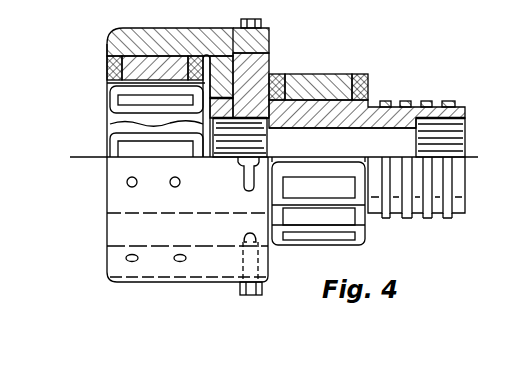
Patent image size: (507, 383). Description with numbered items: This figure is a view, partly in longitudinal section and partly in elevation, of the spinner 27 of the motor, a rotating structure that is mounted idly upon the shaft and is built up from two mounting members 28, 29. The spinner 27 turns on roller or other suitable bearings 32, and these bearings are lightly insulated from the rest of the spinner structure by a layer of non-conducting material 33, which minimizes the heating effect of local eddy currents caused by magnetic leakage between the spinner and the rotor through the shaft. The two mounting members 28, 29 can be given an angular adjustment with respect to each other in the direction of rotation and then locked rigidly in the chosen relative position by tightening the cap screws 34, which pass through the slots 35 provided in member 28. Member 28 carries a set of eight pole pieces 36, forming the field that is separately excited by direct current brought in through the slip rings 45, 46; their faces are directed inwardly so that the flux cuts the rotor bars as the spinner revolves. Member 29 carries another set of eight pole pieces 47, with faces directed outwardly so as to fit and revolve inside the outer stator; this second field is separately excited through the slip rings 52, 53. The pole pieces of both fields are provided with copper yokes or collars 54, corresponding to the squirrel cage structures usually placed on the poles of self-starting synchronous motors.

The spinner 27 is at (97, 236).
The mounting member 28 is at (176, 38).
The mounting member 29 is at (252, 73).
The bearings 32 is at (262, 143).
The non-conducting material 33 is at (283, 127).
The cap screws 34 is at (262, 27).
The slots 35 is at (244, 182).
The pole pieces 36 is at (123, 67).
The slip ring 45 is at (384, 100).
The slip ring 46 is at (405, 100).
The pole pieces 47 is at (335, 79).
The slip ring 52 is at (428, 100).
The slip ring 53 is at (449, 101).
The copper yokes or collars 54 is at (112, 138).